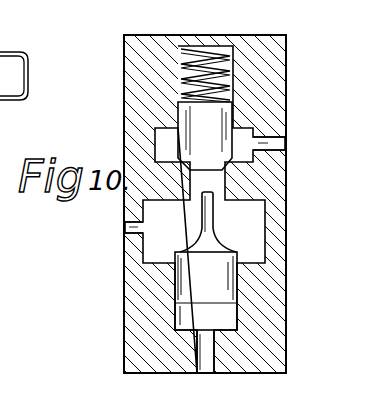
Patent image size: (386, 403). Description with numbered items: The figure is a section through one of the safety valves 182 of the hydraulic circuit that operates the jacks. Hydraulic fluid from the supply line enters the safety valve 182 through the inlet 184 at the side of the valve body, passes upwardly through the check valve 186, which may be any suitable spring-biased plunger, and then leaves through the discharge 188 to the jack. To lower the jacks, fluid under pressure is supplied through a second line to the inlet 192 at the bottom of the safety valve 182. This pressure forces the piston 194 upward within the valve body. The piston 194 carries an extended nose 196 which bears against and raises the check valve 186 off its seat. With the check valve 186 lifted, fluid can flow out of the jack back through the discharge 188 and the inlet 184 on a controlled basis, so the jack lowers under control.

The safety valve 182 is at (286, 28).
The inlet 184 is at (132, 233).
The check valve 186 is at (223, 120).
The discharge 188 is at (283, 147).
The inlet 192 is at (205, 366).
The piston 194 is at (215, 290).
The extended nose 196 is at (212, 228).